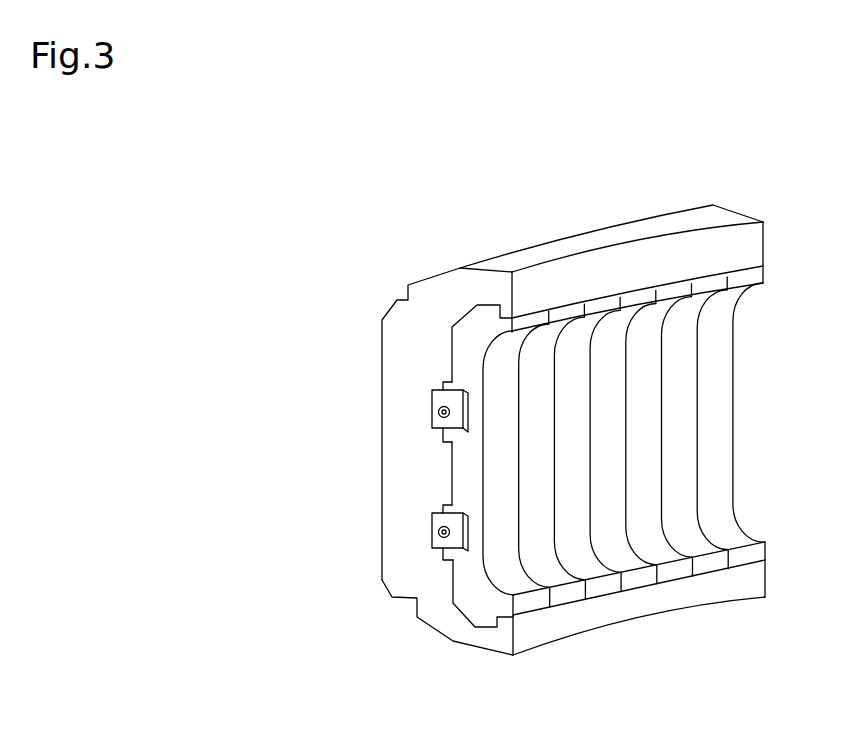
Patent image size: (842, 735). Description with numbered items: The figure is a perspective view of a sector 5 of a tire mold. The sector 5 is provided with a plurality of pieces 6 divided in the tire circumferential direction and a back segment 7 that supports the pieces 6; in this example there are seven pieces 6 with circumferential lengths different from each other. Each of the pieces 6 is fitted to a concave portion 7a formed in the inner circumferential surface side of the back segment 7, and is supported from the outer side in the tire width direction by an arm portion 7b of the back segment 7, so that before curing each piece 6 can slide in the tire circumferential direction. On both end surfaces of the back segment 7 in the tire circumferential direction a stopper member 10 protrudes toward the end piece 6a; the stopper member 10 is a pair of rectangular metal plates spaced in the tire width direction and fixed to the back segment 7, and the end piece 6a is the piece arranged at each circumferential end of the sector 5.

The sector 5 is at (373, 265).
The pieces 6 is at (630, 557).
The end piece 6a is at (725, 347).
The back segment 7 is at (383, 430).
The concave portion 7a is at (453, 580).
The arm portion 7b is at (488, 282).
The stopper member 10 is at (430, 400).